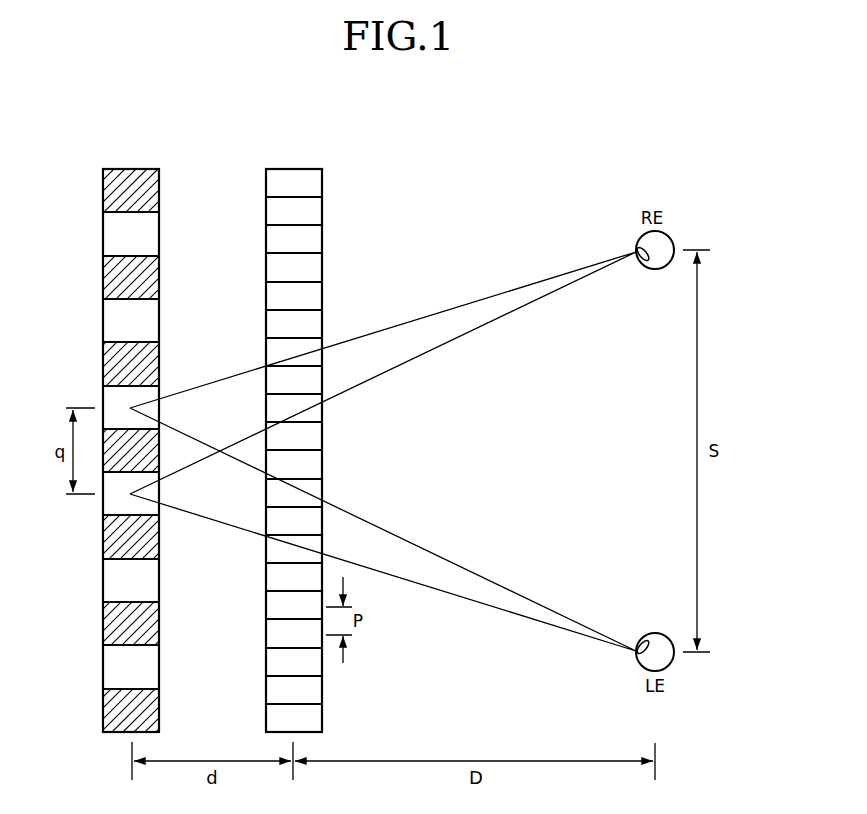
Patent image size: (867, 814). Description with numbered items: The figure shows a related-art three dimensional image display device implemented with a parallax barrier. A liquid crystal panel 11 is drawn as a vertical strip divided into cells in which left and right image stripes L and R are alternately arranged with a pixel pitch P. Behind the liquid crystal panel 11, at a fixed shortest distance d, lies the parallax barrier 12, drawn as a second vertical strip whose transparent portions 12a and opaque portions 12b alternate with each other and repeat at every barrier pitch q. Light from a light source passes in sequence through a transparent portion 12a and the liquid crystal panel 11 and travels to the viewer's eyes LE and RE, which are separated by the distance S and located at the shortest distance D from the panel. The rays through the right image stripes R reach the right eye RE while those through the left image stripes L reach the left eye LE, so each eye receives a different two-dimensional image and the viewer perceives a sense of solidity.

The liquid crystal panel 11 is at (292, 168).
The parallax barrier 12 is at (130, 168).
The transparent portion 12a is at (153, 235).
The opaque portion 12b is at (108, 283).